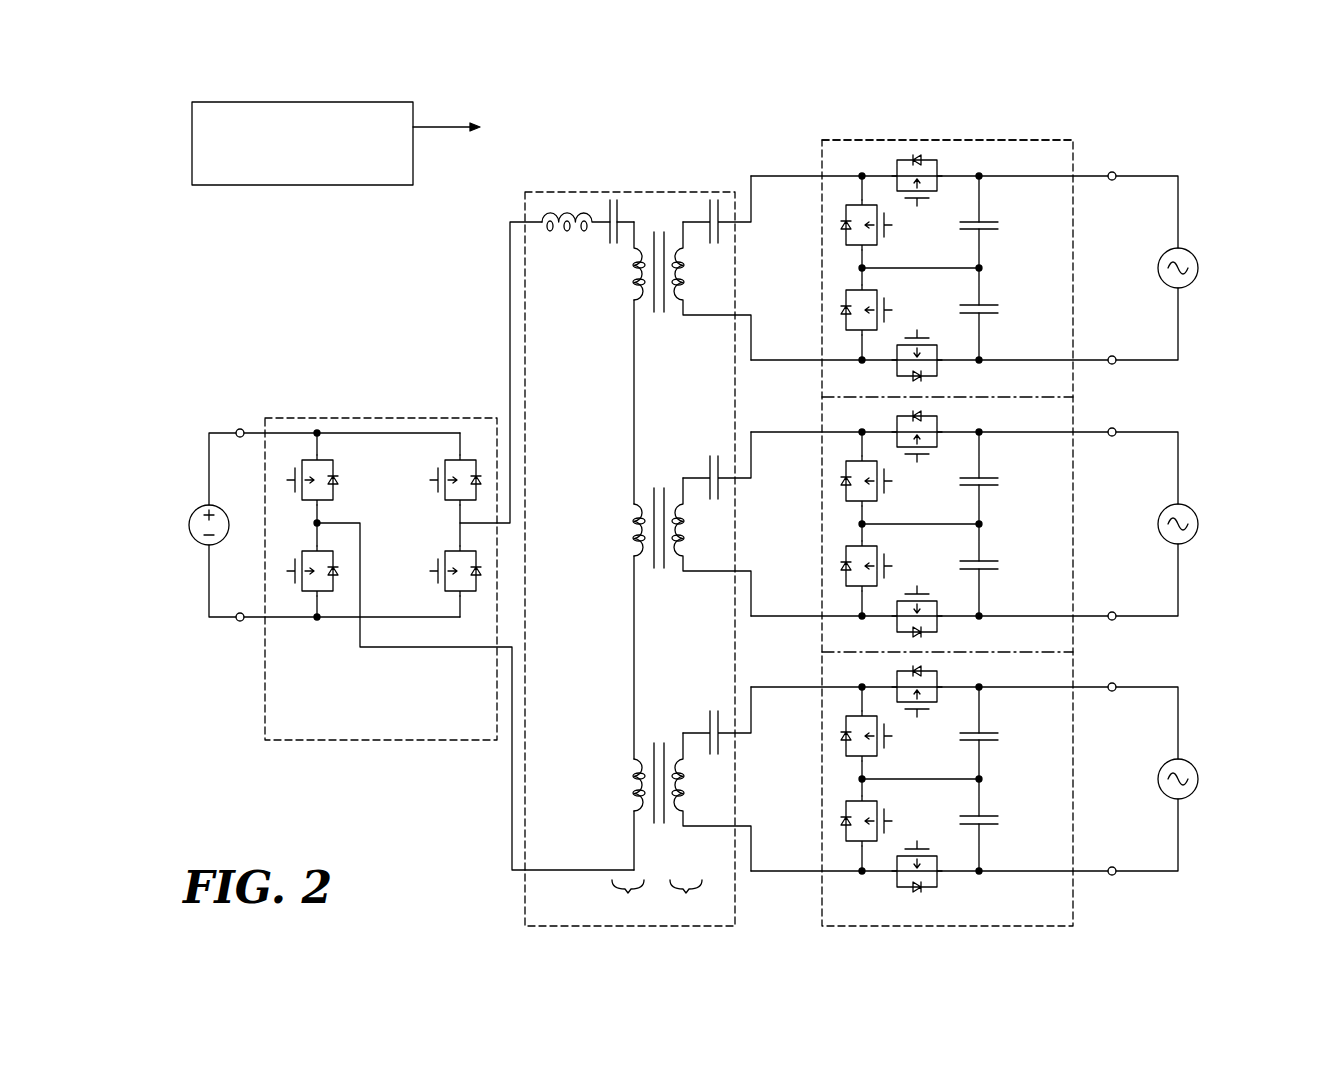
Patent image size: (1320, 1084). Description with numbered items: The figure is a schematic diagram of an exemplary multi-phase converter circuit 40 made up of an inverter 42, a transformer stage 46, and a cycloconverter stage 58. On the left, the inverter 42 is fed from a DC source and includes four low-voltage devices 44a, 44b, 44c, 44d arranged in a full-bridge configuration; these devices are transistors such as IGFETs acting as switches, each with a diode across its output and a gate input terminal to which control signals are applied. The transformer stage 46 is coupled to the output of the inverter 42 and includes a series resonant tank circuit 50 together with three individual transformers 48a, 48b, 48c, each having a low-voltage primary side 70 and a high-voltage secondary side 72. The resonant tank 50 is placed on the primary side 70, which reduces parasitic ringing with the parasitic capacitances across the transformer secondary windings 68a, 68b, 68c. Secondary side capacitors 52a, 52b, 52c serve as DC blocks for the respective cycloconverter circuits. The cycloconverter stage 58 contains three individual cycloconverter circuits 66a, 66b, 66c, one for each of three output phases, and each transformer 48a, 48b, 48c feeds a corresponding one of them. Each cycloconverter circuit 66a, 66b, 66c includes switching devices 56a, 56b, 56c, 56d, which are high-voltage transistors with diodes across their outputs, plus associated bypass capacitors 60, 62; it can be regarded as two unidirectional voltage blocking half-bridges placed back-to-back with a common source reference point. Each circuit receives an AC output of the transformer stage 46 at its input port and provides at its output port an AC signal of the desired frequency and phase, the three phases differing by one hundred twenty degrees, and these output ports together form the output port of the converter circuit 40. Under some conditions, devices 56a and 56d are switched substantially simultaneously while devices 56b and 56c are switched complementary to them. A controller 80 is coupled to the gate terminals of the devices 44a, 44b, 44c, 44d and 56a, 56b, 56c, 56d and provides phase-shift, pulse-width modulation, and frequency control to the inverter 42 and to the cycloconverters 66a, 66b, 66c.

The multi-phase converter circuit 40 is at (1076, 114).
The inverter 42 is at (358, 418).
The low-voltage device 44a is at (314, 457).
The low-voltage device 44b is at (313, 595).
The low-voltage device 44c is at (457, 457).
The low-voltage device 44d is at (448, 595).
The transformer stage 46 is at (535, 190).
The transformer 48a is at (630, 272).
The transformer 48b is at (630, 528).
The transformer 48c is at (630, 783).
The resonant tank circuit 50 is at (574, 244).
The secondary side capacitor 52a is at (710, 212).
The secondary side capacitor 52b is at (710, 470).
The secondary side capacitor 52c is at (710, 727).
The switching device 56a is at (922, 337).
The switching device 56b is at (869, 331).
The switching device 56c is at (869, 205).
The switching device 56d is at (922, 200).
The cycloconverter stage 58 is at (950, 134).
The bypass capacitor 60 is at (988, 231).
The bypass capacitor 62 is at (988, 306).
The cycloconverter circuit 66a is at (820, 163).
The cycloconverter circuit 66b is at (820, 421).
The cycloconverter circuit 66c is at (820, 678).
The transformer secondary winding 68a is at (690, 276).
The transformer secondary winding 68b is at (690, 543).
The transformer secondary winding 68c is at (690, 784).
The primary side 70 is at (628, 902).
The secondary side 72 is at (686, 902).
The controller 80 is at (375, 158).